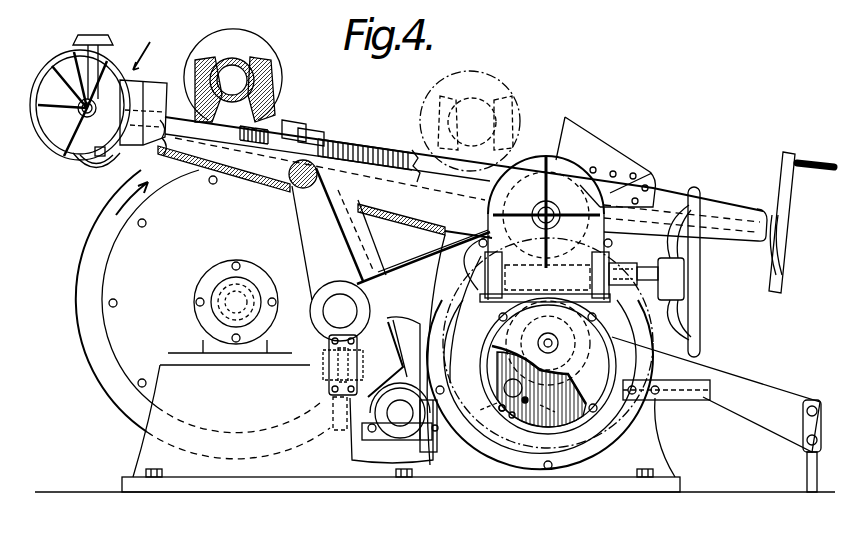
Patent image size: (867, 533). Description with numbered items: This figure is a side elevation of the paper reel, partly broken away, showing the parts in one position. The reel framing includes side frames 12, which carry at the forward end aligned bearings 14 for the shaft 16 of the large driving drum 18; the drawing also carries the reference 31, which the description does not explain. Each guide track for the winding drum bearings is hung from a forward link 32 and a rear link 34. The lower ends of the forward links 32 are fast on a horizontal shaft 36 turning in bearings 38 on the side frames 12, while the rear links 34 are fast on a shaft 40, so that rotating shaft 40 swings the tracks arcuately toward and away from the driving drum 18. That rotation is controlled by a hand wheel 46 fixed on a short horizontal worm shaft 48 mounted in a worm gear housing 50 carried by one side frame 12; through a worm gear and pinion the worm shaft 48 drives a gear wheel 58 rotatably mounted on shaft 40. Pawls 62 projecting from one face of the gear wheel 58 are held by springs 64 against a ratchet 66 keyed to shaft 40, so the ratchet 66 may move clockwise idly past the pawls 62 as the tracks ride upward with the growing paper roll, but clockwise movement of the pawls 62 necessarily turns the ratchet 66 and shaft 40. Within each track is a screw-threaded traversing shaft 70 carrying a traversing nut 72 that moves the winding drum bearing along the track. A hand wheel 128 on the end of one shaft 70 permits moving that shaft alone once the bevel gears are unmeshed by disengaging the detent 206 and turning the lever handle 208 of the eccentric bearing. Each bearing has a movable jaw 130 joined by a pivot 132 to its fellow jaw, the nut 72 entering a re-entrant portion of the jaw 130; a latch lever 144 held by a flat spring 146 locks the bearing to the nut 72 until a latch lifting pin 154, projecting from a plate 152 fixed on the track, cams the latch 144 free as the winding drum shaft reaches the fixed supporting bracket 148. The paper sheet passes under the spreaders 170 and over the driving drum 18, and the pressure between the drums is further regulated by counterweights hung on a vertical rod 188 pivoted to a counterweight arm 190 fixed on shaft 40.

The side frames 12 is at (335, 480).
The bearings 14 is at (208, 296).
The shaft 16 is at (257, 288).
The driving drum 18 is at (98, 248).
The direction arrow 31 is at (143, 44).
The forward link 32 is at (300, 208).
The rear link 34 is at (520, 308).
The horizontal shaft 36 is at (347, 306).
The bearings 38 is at (322, 320).
The shaft 40 is at (500, 335).
The hand wheel 46 is at (695, 333).
The worm shaft 48 is at (647, 270).
The worm gear housing 50 is at (495, 270).
The gear wheel 58 is at (568, 408).
The pawls 62 is at (507, 380).
The springs 64 is at (497, 403).
The ratchet 66 is at (540, 405).
The screw-threaded traversing shaft 70 is at (348, 148).
The traversing nut 72 is at (330, 146).
The hand wheel 128 is at (787, 172).
The movable jaw 130 is at (282, 74).
The pivot 132 is at (200, 78).
The latch lever 144 is at (310, 128).
The flat spring 146 is at (290, 120).
The winding drum supporting bracket 148 is at (583, 140).
The plate 152 is at (645, 175).
The latch lifting pin 154 is at (613, 170).
The spreaders 170 is at (95, 172).
The vertical rod 188 is at (808, 467).
The counterweight arm 190 is at (776, 398).
The detent 206 is at (147, 110).
The lever handle 208 is at (72, 152).